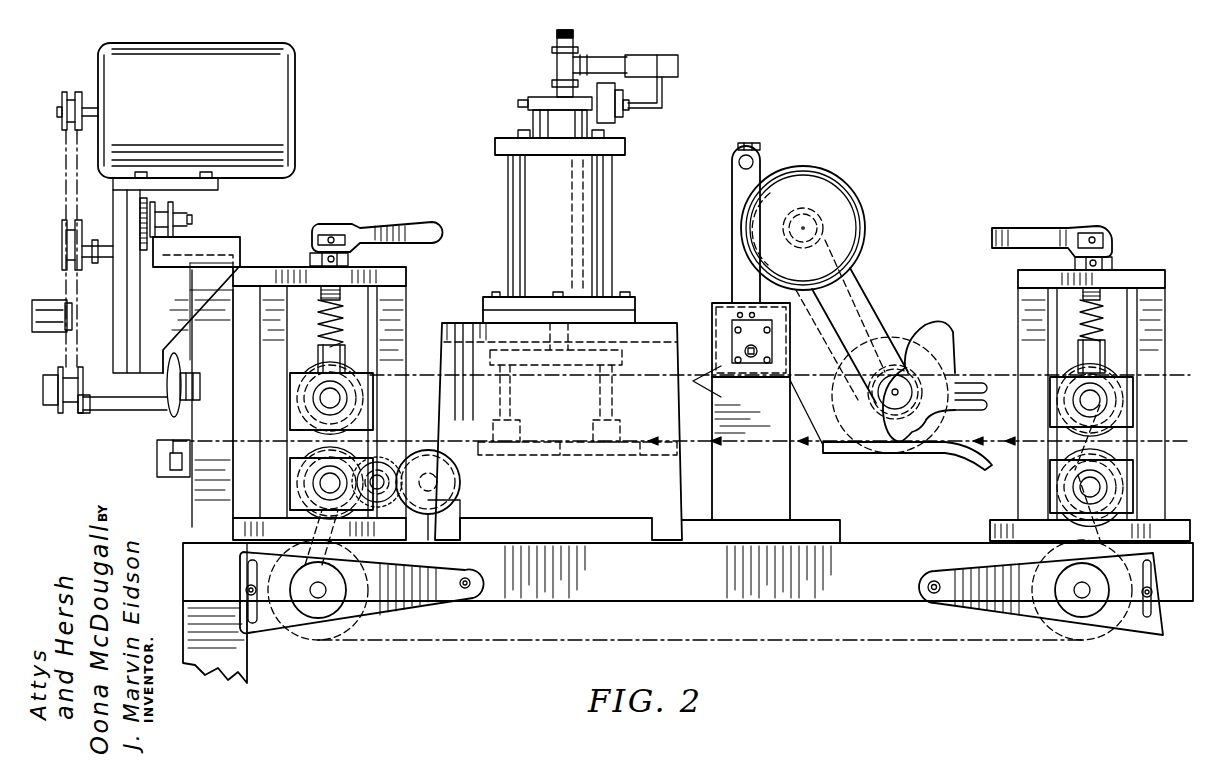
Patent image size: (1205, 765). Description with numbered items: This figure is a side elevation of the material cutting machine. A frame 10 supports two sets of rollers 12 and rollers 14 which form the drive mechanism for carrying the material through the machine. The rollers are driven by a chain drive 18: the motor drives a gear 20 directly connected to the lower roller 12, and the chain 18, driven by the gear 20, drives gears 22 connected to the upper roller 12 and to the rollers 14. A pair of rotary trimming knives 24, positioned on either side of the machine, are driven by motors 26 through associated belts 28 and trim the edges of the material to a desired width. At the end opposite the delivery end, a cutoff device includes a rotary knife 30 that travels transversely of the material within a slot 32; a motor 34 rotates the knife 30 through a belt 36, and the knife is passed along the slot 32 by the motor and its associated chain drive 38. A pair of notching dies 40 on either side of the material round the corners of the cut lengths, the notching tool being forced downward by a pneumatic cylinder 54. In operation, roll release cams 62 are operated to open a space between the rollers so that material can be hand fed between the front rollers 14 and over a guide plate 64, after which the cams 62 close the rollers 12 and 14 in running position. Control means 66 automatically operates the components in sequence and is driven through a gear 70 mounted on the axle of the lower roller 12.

The frame 10 is at (237, 657).
The rollers 12 is at (343, 367).
The rollers 14 is at (1100, 447).
The chain drive 18 is at (415, 372).
The gear 20 is at (293, 490).
The gears 22 is at (302, 400).
The rotary trimming knives 24 is at (972, 430).
The motors 26 is at (840, 190).
The belts 28 is at (863, 283).
The rotary knife 30 is at (172, 427).
The slot 32 is at (187, 474).
The motor 34 is at (201, 95).
The belt 36 is at (58, 180).
The chain drive 38 is at (170, 247).
The notching dies 40 is at (622, 405).
The pneumatic cylinder 54 is at (612, 186).
The roll release cams 62 is at (408, 233).
The guide plate 64 is at (955, 452).
The control means 66 is at (466, 492).
The gear 70 is at (299, 467).